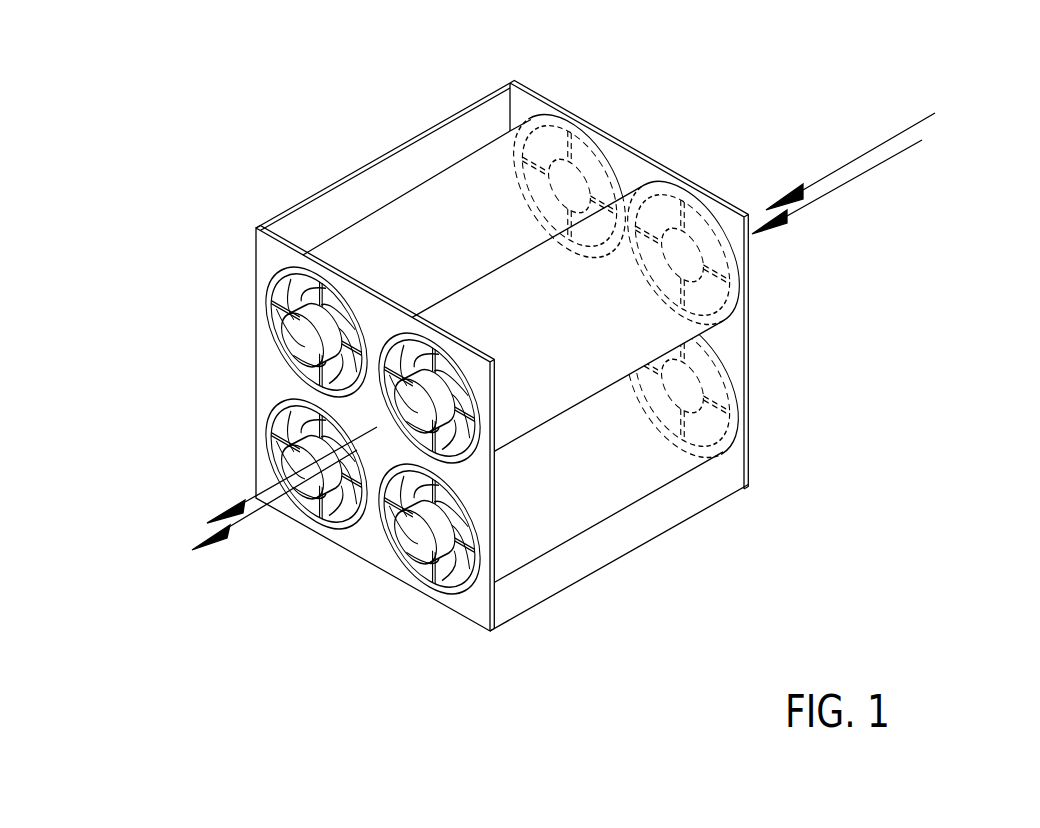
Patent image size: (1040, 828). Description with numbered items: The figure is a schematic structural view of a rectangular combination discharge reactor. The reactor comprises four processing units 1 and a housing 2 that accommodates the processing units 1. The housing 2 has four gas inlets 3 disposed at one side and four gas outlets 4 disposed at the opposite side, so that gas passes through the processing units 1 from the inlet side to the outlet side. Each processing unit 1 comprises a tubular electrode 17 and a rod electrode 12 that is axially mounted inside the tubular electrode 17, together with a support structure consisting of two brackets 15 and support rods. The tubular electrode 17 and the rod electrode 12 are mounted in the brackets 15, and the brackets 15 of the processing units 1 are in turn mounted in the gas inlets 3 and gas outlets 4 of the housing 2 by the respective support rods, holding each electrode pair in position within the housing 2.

The processing unit 1 is at (450, 192).
The housing 2 is at (312, 200).
The gas inlet 3 is at (717, 260).
The gas outlet 4 is at (350, 516).
The rod electrode 12 is at (297, 345).
The bracket 15 is at (430, 568).
The tubular electrode 17 is at (292, 291).